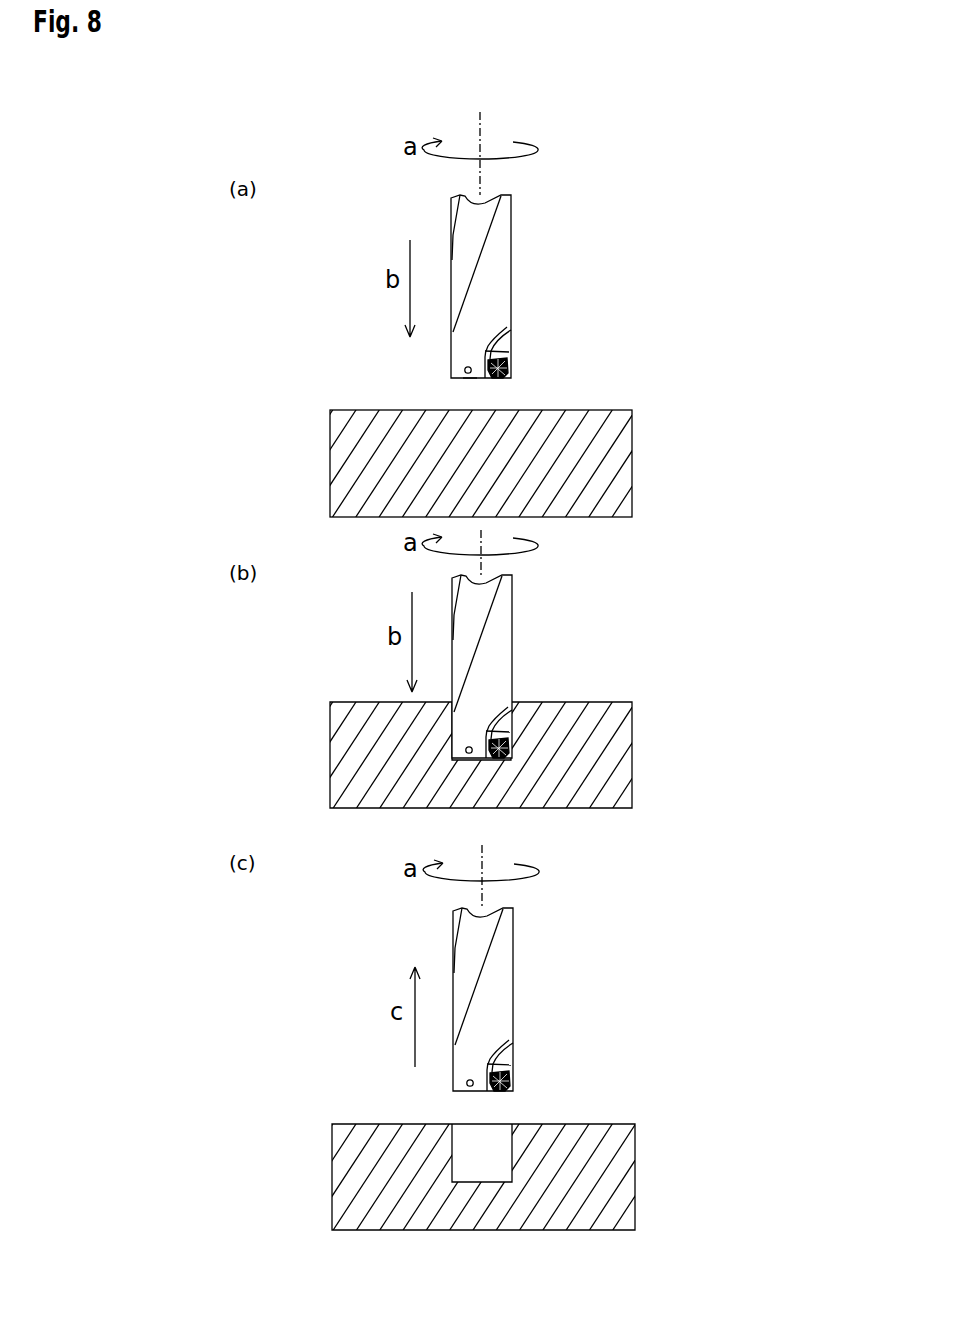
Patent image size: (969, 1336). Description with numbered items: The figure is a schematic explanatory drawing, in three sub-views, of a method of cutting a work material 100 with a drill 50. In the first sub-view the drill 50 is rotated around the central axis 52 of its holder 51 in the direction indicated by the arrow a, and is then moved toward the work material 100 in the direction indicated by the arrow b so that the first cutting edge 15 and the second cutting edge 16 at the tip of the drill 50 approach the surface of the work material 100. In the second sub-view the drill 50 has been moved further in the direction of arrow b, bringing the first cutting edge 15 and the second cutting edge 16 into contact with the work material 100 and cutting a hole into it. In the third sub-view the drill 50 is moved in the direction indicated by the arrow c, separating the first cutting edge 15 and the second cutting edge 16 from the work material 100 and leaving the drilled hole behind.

The drill 50 is at (500, 633).
The holder 51 is at (521, 286).
The central axis 52 is at (482, 122).
The first cutting edge 15 is at (430, 382).
The second cutting edge 16 is at (539, 377).
The work material 100 is at (607, 466).